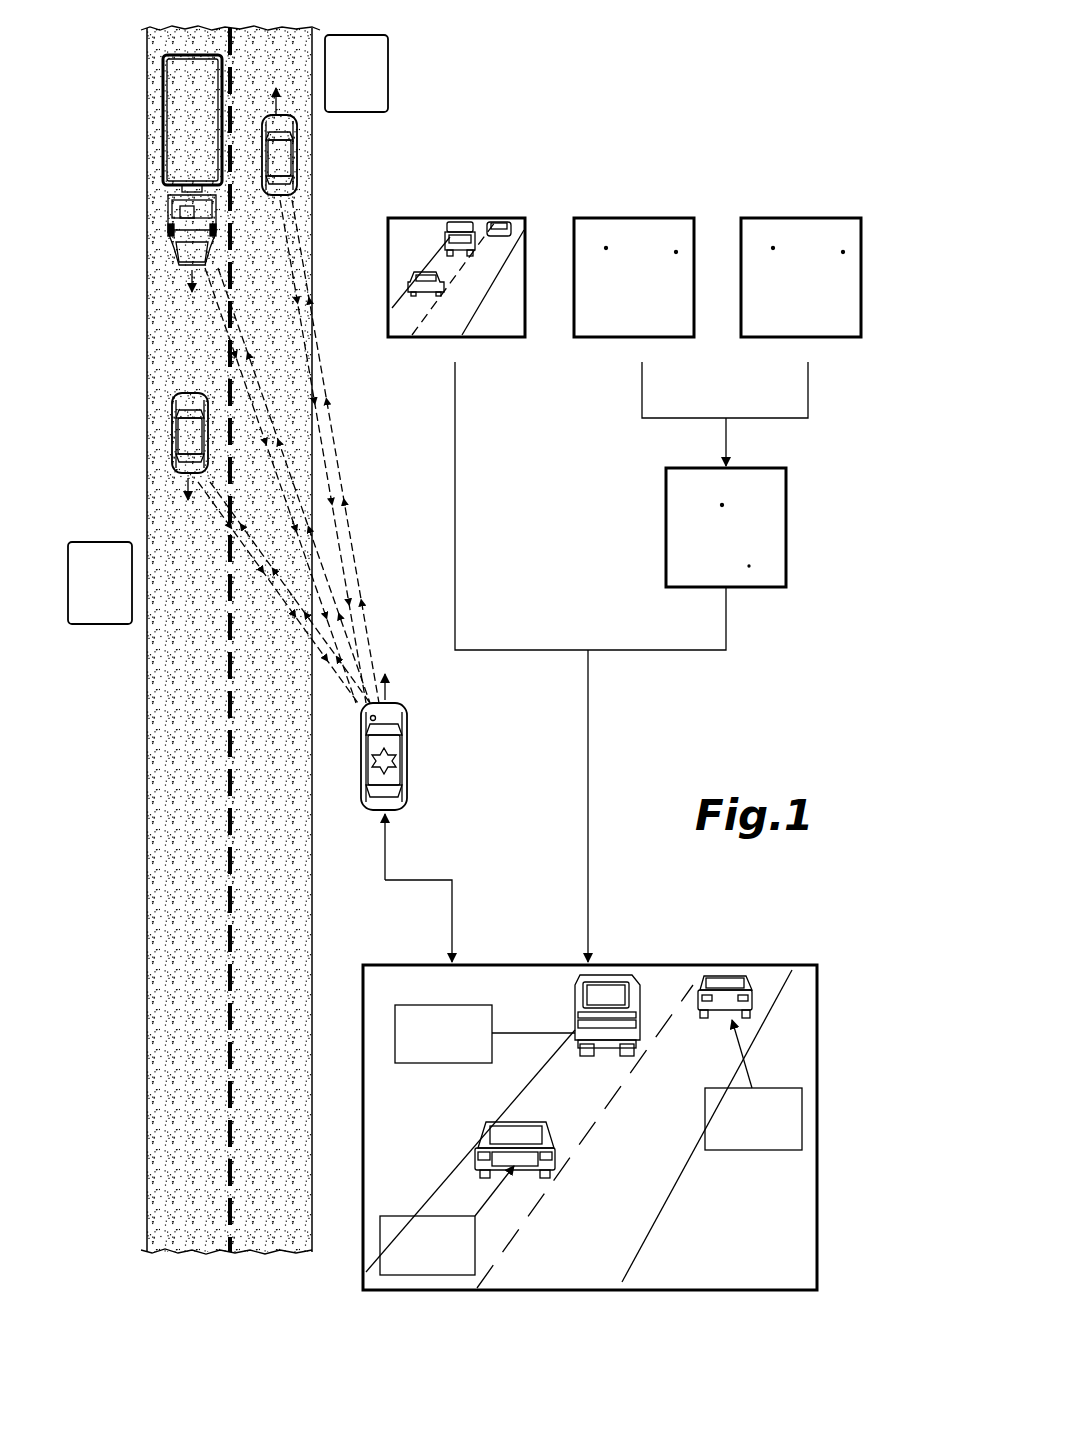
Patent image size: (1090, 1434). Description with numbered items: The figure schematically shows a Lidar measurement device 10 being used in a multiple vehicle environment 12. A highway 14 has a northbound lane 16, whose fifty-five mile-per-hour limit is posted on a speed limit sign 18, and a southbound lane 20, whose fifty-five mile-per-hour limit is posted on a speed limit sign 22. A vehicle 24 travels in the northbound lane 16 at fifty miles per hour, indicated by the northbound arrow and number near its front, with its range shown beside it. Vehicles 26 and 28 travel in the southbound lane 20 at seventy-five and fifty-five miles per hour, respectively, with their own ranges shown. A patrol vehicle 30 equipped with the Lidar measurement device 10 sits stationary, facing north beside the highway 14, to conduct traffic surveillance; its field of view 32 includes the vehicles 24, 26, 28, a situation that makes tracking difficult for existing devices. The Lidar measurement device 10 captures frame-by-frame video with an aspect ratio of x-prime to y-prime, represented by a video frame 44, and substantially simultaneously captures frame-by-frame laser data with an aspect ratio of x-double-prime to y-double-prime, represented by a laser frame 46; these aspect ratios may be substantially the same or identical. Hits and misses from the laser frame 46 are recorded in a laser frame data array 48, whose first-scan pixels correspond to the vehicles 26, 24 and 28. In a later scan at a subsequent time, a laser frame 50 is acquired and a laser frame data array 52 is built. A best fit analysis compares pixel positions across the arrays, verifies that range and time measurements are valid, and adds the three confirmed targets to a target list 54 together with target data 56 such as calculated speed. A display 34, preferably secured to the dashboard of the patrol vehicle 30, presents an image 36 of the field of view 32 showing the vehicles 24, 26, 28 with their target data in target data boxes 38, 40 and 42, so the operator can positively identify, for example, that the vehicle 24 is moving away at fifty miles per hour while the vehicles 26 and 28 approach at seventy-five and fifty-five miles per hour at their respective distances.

The Lidar measurement device 10 is at (393, 668).
The multiple vehicle environment 12 is at (105, 72).
The highway 14 is at (142, 908).
The northbound lane 16 is at (261, 640).
The speed limit sign 18 is at (388, 68).
The southbound lane 20 is at (190, 345).
The speed limit sign 22 is at (100, 624).
The vehicle 24 is at (297, 178).
The vehicle 26 is at (167, 118).
The vehicle 28 is at (172, 432).
The patrol vehicle 30 is at (407, 757).
The field of view 32 is at (368, 552).
The display 34 is at (603, 1105).
The image 36 is at (681, 1238).
The target data box 38 is at (780, 1088).
The target data box 40 is at (492, 1015).
The target data box 42 is at (427, 1216).
The video frame 44 is at (484, 216).
The laser frame 46 is at (666, 216).
The laser frame data array 48 is at (628, 318).
The laser frame 50 is at (840, 216).
The laser frame data array 52 is at (797, 318).
The target list 54 is at (790, 502).
The target data 56 is at (749, 569).